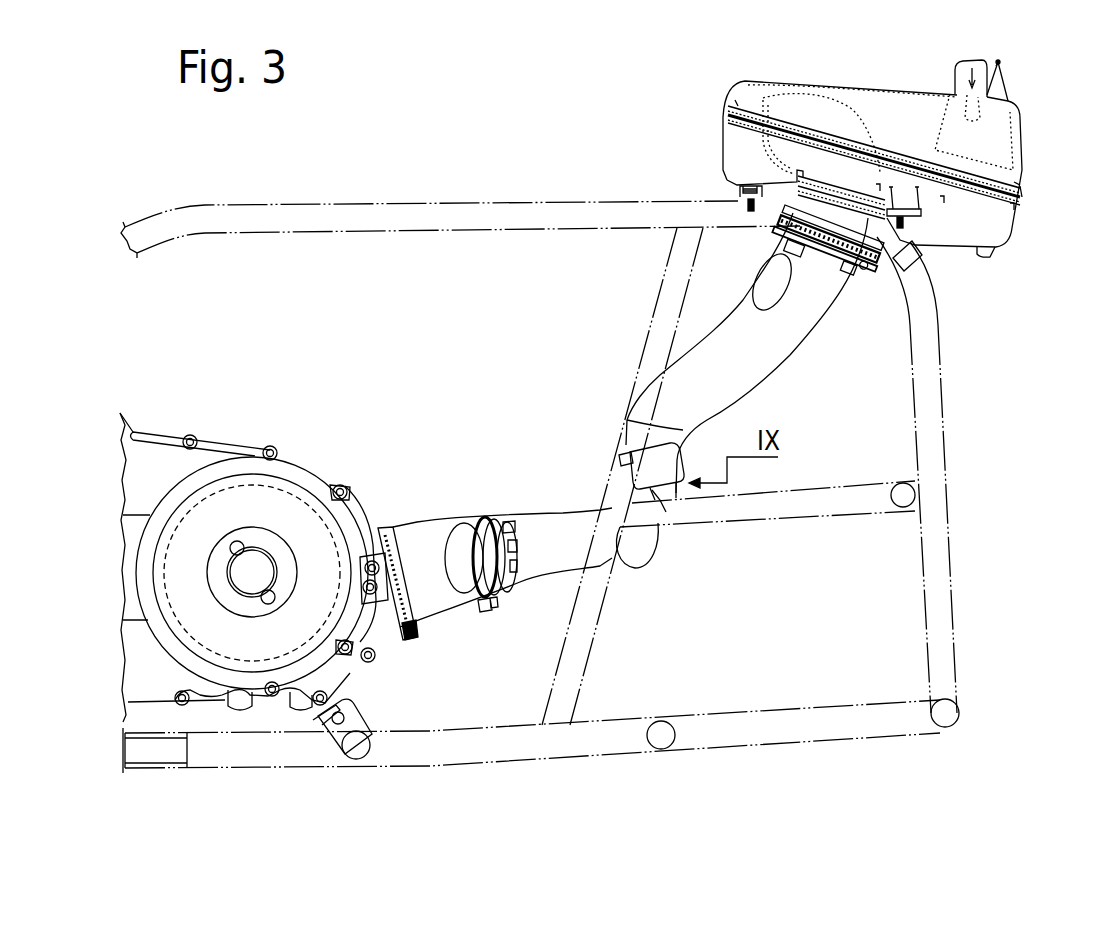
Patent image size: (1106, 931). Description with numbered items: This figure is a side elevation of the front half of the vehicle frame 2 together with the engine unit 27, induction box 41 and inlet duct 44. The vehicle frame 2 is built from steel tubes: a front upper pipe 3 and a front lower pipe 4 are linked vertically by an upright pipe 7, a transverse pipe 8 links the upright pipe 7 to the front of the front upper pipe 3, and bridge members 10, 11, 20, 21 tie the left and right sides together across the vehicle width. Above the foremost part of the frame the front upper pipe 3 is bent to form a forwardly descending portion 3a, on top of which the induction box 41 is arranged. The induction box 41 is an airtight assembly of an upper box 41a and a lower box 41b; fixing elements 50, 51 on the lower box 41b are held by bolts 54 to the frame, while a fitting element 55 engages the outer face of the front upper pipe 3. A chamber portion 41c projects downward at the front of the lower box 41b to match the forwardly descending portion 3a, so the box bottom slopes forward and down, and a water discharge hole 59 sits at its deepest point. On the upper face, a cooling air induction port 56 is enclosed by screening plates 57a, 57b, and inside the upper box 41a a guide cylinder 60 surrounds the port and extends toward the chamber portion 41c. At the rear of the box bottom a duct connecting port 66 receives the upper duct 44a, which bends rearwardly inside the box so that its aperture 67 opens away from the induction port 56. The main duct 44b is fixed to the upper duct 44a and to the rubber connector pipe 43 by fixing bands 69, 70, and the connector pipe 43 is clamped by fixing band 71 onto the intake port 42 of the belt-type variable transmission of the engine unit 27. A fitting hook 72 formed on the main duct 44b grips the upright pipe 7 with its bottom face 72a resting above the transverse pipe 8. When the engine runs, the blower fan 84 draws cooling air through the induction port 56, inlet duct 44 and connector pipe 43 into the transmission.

The vehicle frame 2 is at (260, 200).
The front upper pipe 3 is at (407, 236).
The forwardly descending portion 3a is at (950, 275).
The front lower pipe 4 is at (765, 704).
The upright pipe 7 is at (656, 283).
The transverse pipe 8 is at (831, 497).
The bridge member 10 is at (945, 718).
The bridge member 11 is at (903, 490).
The bridge member 20 is at (356, 748).
The bridge member 21 is at (661, 740).
The engine unit 27 is at (228, 432).
The induction box 41 is at (640, 63).
The upper box 41a is at (735, 92).
The lower box 41b is at (724, 144).
The chamber portion 41c is at (1005, 231).
The intake port 42 is at (386, 625).
The connector pipe 43 is at (417, 522).
The inlet duct 44 is at (998, 318).
The upper duct 44a is at (903, 307).
The main duct 44b is at (773, 357).
The fixing element 50 is at (737, 191).
The fixing element 51 is at (923, 213).
The bolt 54 is at (756, 210).
The fitting element 55 is at (927, 260).
The cooling air induction port 56 is at (971, 66).
The screening plate 57a is at (957, 78).
The screening plate 57b is at (1005, 78).
The water discharge hole 59 is at (991, 256).
The guide cylinder 60 is at (1015, 145).
The duct connecting port 66 is at (842, 246).
The aperture 67 is at (753, 143).
The fixing band 69 is at (876, 248).
The fixing band 70 is at (496, 612).
The fixing band 71 is at (417, 622).
The fitting hook 72 is at (618, 460).
The bottom face 72a is at (683, 505).
The blower fan 84 is at (298, 493).